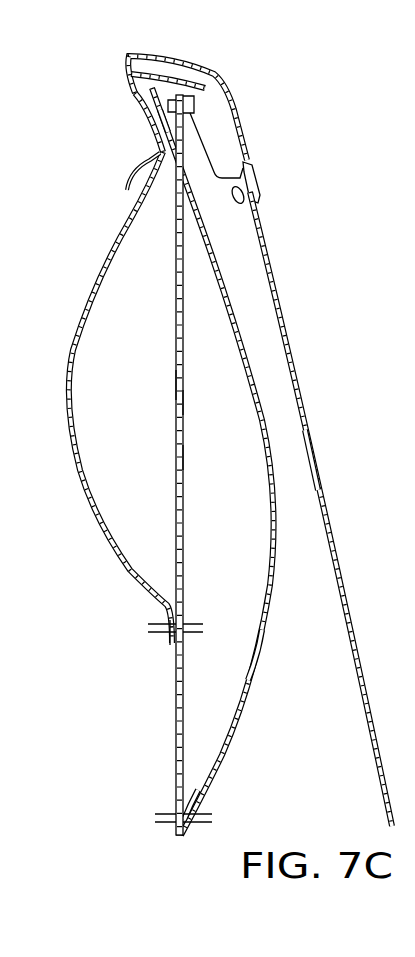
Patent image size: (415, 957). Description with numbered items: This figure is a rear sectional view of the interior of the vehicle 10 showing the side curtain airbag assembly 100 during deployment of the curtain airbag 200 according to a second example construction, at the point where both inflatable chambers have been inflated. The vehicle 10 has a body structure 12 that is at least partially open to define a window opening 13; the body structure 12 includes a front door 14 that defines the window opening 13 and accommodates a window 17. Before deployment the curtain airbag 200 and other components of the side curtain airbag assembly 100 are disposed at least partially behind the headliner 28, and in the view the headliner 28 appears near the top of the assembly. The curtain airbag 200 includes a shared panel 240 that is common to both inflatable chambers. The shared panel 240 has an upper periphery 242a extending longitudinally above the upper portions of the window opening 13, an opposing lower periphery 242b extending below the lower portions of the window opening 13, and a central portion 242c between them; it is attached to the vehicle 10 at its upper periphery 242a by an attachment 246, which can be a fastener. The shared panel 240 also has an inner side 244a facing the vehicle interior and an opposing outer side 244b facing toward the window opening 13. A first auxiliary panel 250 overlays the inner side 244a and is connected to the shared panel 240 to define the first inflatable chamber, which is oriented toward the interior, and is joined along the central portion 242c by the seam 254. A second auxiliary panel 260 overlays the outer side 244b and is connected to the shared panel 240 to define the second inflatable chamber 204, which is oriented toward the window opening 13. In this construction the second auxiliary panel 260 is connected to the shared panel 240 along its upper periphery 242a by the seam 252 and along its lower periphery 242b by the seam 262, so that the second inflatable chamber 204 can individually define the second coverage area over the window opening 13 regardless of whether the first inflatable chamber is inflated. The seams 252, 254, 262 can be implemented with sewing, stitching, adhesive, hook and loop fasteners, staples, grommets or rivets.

The vehicle 10 is at (224, 130).
The body structure 12 is at (261, 182).
The front door 14 is at (238, 195).
The window opening 13 is at (300, 454).
The window 17 is at (289, 340).
The headliner 28 is at (126, 188).
The side curtain airbag assembly 100 is at (160, 126).
The curtain airbag 200 is at (156, 152).
The second inflatable chamber 204 is at (262, 598).
The shared panel 240 is at (184, 348).
The upper periphery 242a is at (184, 123).
The lower periphery 242b is at (180, 803).
The central portion 242c is at (184, 402).
The inner side 244a is at (176, 386).
The outer side 244b is at (184, 457).
The attachment 246 is at (196, 88).
The first auxiliary panel 250 is at (70, 410).
The seam 252 is at (188, 104).
The seam 254 is at (156, 648).
The second auxiliary panel 260 is at (256, 670).
The seam 262 is at (152, 795).